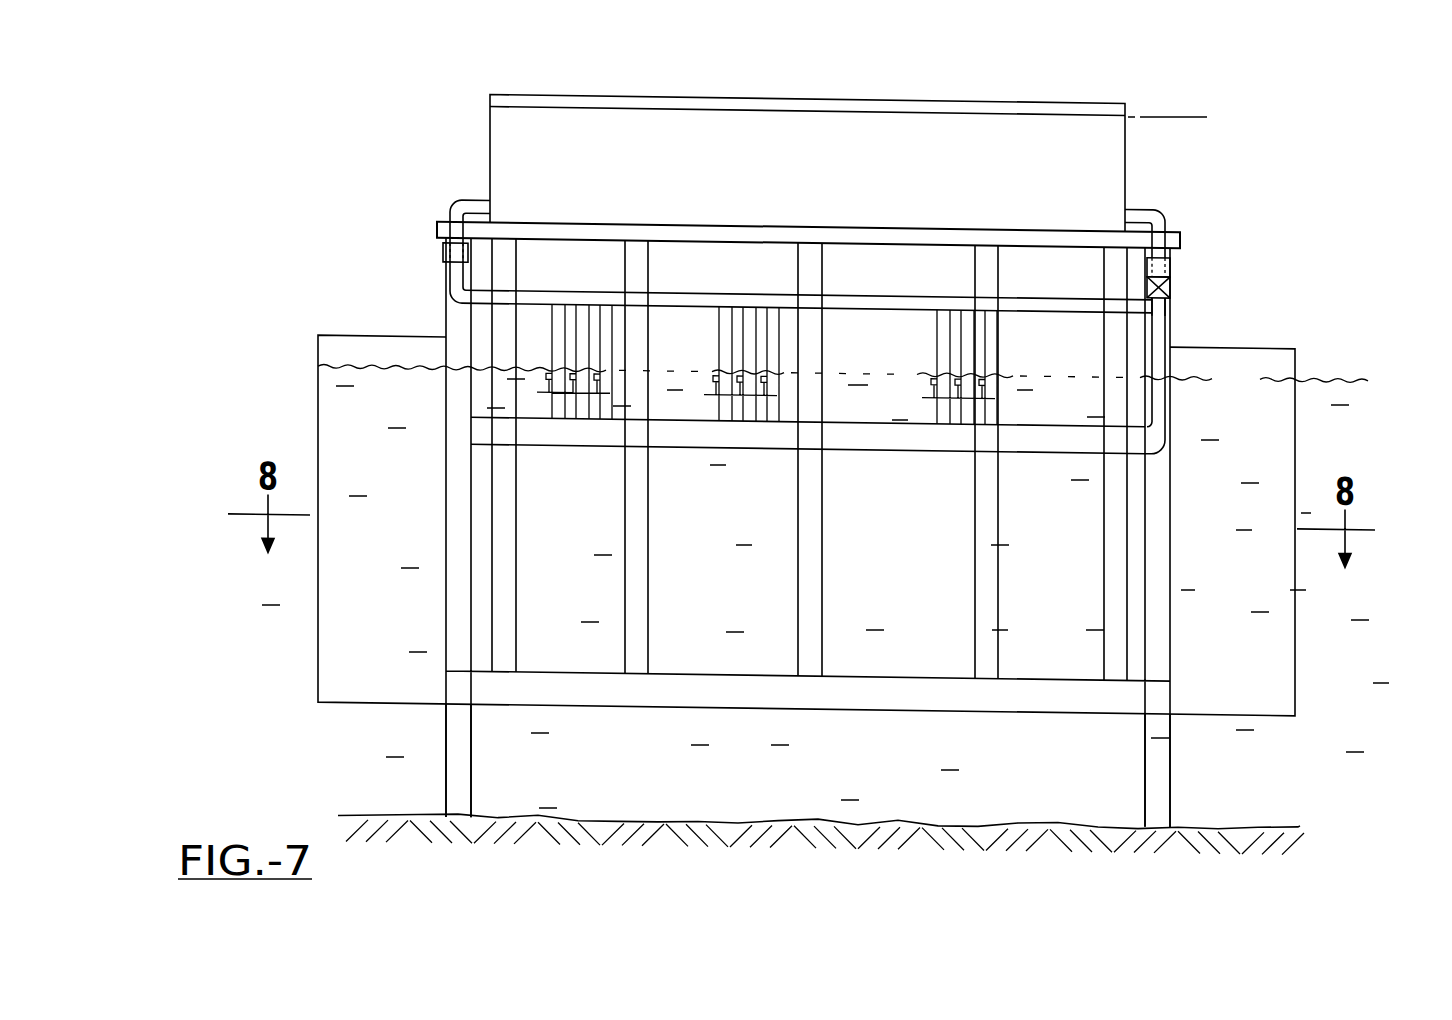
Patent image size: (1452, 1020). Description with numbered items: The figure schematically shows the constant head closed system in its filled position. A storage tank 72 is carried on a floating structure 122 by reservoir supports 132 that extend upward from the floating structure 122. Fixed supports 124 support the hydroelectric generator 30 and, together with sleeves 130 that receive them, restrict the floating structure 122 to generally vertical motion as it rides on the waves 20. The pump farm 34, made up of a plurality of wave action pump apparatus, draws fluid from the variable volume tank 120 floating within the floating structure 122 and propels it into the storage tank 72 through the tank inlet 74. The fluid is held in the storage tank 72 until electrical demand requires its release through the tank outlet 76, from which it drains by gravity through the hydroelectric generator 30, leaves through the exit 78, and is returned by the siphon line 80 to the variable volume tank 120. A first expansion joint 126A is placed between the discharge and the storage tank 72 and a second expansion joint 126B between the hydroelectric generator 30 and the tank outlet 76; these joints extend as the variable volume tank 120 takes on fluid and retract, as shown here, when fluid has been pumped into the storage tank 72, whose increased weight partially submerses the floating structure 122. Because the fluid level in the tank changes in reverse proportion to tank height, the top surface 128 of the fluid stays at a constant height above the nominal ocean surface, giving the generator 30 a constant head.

The waves 20 is at (1334, 377).
The hydroelectric generator 30 is at (1171, 289).
The pump farm 34 is at (930, 367).
The storage tank 72 is at (489, 133).
The tank inlet 74 is at (487, 203).
The tank outlet 76 is at (1136, 214).
The exit 78 is at (1160, 302).
The siphon line 80 is at (1158, 392).
The variable volume tank 120 is at (591, 450).
The floating structure 122 is at (318, 383).
The fixed supports 124 is at (1146, 774).
The first expansion joint 126A is at (441, 252).
The second expansion joint 126B is at (1171, 270).
The top surface 128 is at (678, 107).
The sleeves 130 is at (1168, 117).
The reservoir supports 132 is at (824, 540).